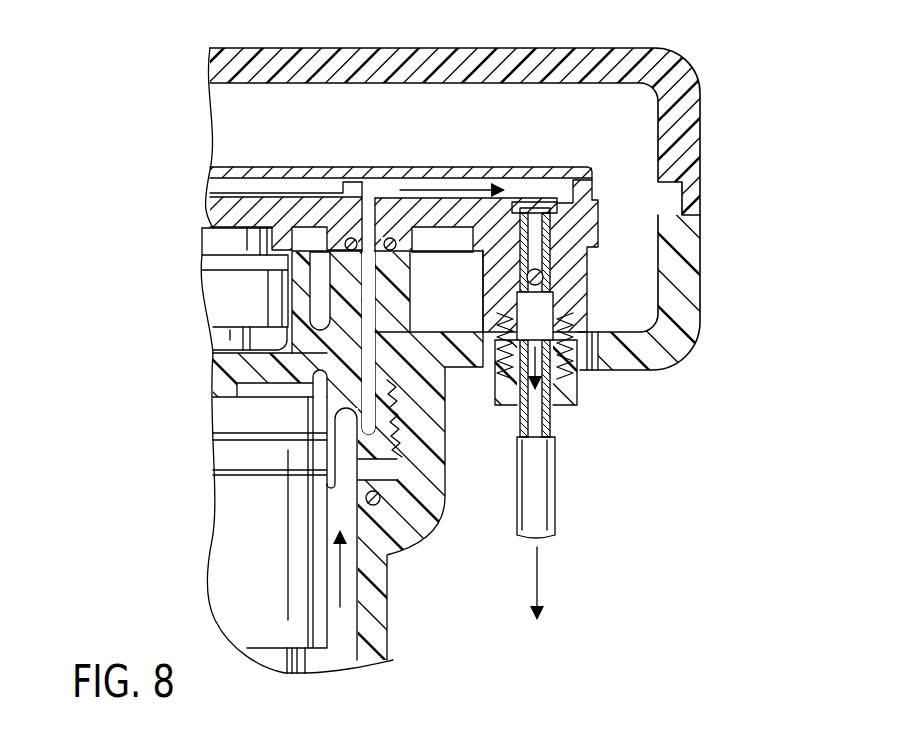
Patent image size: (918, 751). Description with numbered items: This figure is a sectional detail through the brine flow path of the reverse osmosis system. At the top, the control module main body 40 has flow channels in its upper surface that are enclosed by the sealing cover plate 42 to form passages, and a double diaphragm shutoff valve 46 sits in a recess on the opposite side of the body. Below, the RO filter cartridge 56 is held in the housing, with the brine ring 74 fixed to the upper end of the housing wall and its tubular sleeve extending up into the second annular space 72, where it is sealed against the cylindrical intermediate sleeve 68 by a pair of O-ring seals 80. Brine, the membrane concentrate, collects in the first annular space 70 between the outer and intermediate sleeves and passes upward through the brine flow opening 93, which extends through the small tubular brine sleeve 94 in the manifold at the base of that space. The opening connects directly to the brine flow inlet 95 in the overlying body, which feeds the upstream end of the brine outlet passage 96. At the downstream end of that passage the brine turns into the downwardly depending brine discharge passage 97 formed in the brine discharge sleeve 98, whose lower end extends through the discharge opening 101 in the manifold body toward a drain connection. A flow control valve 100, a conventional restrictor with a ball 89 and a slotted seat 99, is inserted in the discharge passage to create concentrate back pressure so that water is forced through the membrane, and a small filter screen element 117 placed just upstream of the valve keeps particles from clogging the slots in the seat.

The main body 40 is at (293, 210).
The sealing cover plate 42 is at (422, 168).
The double diaphragm shutoff valve 46 is at (213, 288).
The RO filter cartridge 56 is at (278, 660).
The cylindrical intermediate sleeve 68 is at (358, 477).
The first annular space 70 is at (352, 457).
The second annular space 72 is at (250, 384).
The brine ring 74 is at (238, 533).
The O-ring seals 80 is at (273, 470).
The ball 89 is at (546, 303).
The brine flow opening 93 is at (375, 327).
The tubular brine sleeve 94 is at (387, 273).
The brine flow inlet 95 is at (366, 196).
The brine outlet passage 96 is at (478, 187).
The brine discharge passage 97 is at (603, 333).
The brine discharge sleeve 98 is at (583, 227).
The seat 99 is at (498, 380).
The flow control valve 100 is at (548, 256).
The discharge opening 101 is at (593, 352).
The filter screen element 117 is at (537, 205).